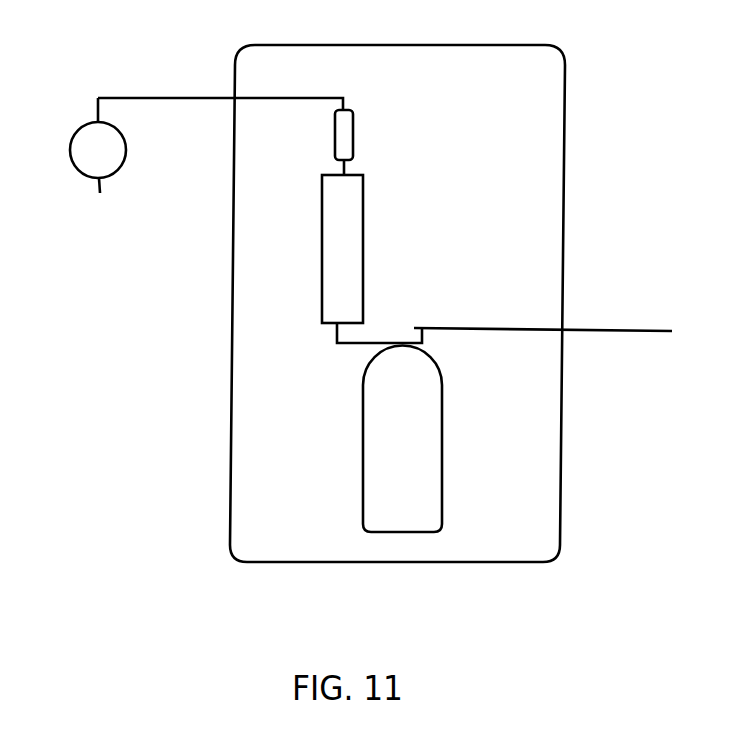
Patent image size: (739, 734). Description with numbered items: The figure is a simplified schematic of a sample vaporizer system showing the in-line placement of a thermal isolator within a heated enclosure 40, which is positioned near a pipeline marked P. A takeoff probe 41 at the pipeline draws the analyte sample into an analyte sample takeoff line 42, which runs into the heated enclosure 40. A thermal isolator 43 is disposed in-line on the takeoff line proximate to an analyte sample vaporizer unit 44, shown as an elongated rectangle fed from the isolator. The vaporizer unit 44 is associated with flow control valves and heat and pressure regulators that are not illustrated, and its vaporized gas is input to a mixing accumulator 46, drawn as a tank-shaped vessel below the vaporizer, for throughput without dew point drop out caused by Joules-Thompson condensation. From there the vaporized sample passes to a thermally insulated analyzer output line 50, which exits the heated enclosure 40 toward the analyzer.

The heated enclosure 40 is at (578, 75).
The takeoff probe 41 is at (98, 123).
The analyte sample takeoff line 42 is at (315, 95).
The thermal isolator 43 is at (353, 134).
The analyte sample vaporizer unit 44 is at (363, 268).
The mixing accumulator 46 is at (442, 483).
The thermally insulated analyzer output line 50 is at (610, 331).